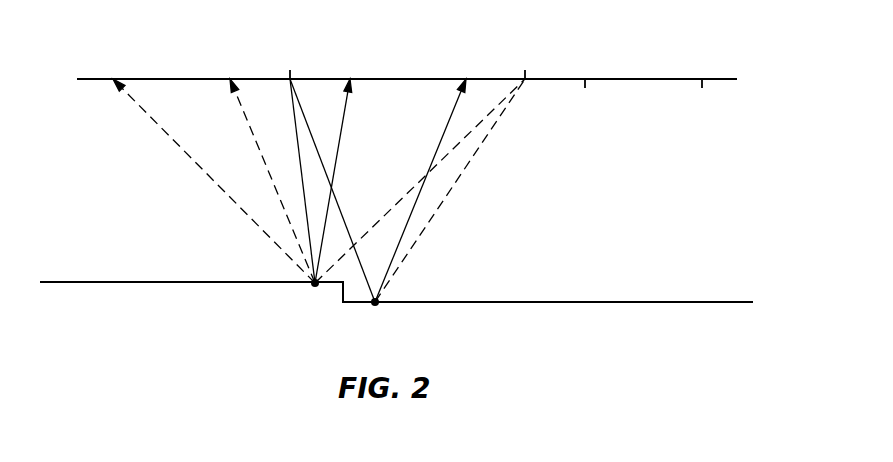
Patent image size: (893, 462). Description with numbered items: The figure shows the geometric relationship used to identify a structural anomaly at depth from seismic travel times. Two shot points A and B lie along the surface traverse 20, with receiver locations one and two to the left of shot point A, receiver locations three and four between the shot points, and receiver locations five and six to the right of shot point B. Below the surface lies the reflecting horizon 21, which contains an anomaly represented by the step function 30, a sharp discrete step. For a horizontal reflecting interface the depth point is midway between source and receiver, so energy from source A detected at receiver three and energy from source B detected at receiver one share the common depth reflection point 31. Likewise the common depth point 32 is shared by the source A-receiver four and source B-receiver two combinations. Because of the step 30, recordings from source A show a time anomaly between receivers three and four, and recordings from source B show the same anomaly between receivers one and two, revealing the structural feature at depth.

The surface traverse 20 is at (720, 79).
The reflecting horizon 21 is at (156, 281).
The step function 30 is at (341, 297).
The common depth reflection point 31 is at (306, 287).
The common depth point 32 is at (375, 305).